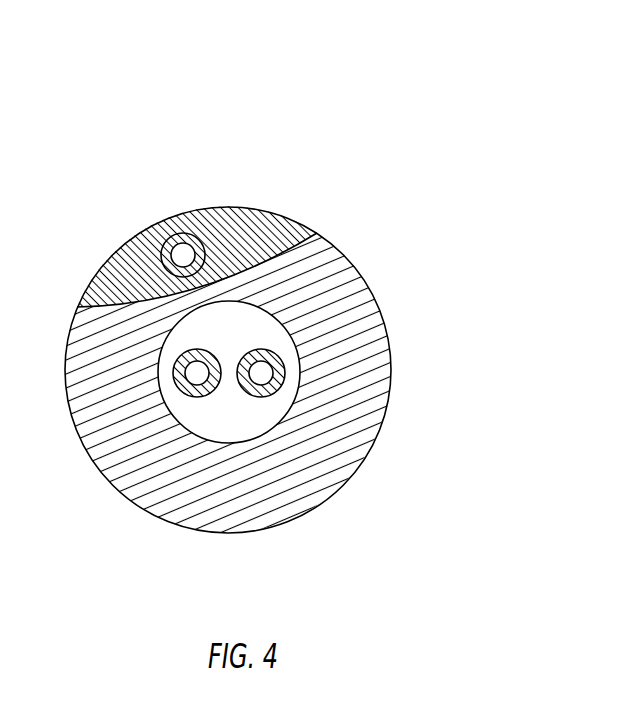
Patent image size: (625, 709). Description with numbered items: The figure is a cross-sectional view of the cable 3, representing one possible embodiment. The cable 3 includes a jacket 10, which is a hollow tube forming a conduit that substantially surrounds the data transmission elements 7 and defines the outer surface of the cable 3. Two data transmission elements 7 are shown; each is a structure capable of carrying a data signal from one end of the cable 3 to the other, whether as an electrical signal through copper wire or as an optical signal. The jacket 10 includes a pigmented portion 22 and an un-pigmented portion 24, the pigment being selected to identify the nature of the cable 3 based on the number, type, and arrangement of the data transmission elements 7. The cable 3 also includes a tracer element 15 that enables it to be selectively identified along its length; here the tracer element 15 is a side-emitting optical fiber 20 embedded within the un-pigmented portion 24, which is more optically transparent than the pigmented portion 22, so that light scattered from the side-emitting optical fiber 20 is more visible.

The cable 3 is at (470, 82).
The jacket 10 is at (112, 505).
The un-pigmented portion 24 is at (250, 218).
The pigmented portion 22 is at (342, 448).
The side-emitting optical fiber 20 is at (168, 253).
The tracer element 15 is at (177, 233).
The data transmission element 7 is at (262, 398).